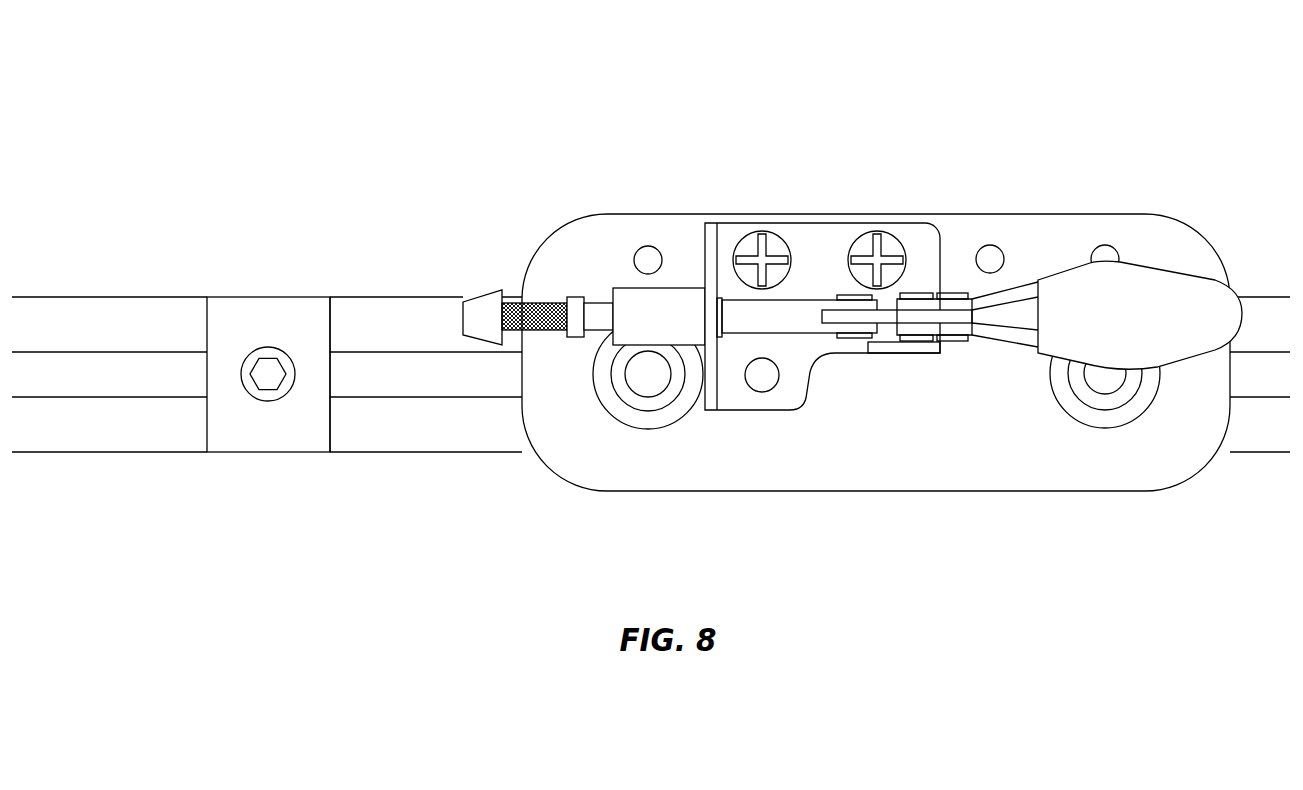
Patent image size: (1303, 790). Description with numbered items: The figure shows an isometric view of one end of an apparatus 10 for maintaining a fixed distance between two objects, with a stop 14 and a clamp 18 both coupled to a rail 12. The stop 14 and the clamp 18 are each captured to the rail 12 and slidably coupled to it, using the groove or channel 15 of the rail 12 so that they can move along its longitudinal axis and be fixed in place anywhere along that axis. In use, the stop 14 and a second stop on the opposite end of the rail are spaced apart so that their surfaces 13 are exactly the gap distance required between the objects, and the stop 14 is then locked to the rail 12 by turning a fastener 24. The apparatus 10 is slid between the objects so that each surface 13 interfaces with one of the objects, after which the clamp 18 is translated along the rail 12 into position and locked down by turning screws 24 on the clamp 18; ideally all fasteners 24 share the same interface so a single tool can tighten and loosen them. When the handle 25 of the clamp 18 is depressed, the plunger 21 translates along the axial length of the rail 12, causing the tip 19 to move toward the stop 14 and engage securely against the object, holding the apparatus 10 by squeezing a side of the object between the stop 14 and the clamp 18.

The apparatus 10 is at (400, 126).
The rail 12 is at (104, 350).
The surface 13 is at (330, 427).
The stop 14 is at (274, 317).
The channel 15 is at (138, 373).
The clamp 18 is at (1043, 238).
The tip 19 is at (487, 310).
The plunger 21 is at (795, 315).
The fastener 24 is at (268, 395).
The handle 25 is at (1160, 293).